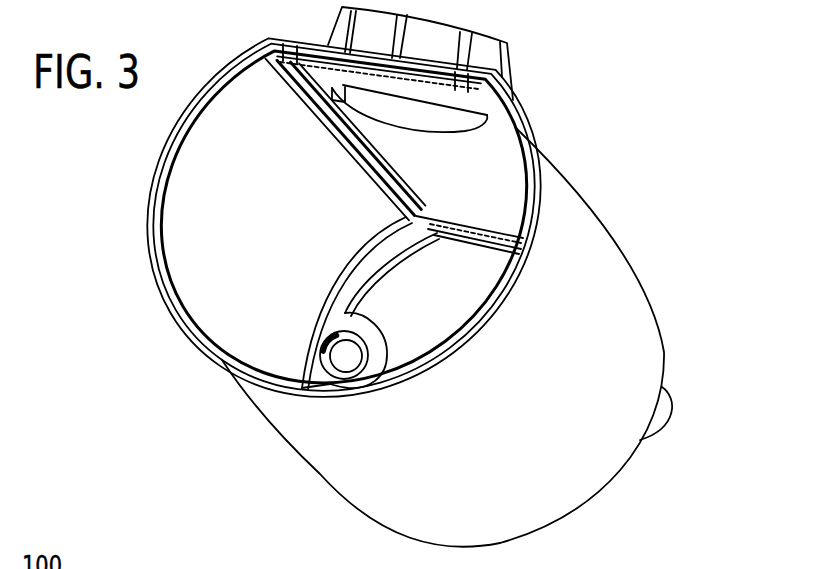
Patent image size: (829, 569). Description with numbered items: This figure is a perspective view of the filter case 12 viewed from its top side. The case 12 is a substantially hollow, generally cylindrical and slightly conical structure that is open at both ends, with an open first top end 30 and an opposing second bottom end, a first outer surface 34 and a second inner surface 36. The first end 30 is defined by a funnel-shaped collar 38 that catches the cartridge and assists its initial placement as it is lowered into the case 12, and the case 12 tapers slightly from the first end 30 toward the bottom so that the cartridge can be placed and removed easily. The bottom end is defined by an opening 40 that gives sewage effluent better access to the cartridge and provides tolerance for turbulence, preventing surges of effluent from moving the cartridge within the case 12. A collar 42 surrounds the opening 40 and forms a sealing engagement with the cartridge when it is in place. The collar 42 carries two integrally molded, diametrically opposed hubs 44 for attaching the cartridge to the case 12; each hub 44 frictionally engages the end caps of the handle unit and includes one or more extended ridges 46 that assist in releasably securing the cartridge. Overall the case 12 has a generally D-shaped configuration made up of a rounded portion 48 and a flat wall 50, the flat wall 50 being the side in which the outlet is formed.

The case 12 is at (272, 427).
The first top end 30 is at (170, 288).
The first outer surface 34 is at (345, 447).
The second inner surface 36 is at (217, 260).
The funnel-shaped collar 38 is at (163, 171).
The opening 40 is at (447, 312).
The collar 42 is at (380, 250).
The hubs 44 is at (316, 356).
The extended ridges 46 is at (327, 337).
The rounded portion 48 is at (252, 105).
The flat wall 50 is at (478, 158).